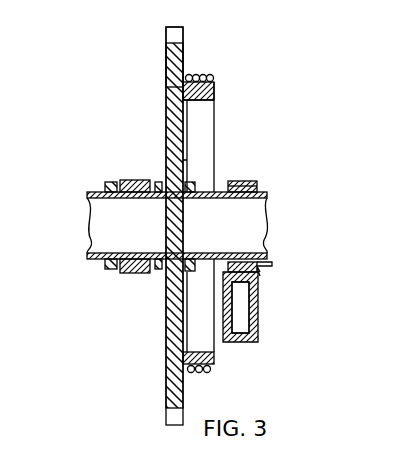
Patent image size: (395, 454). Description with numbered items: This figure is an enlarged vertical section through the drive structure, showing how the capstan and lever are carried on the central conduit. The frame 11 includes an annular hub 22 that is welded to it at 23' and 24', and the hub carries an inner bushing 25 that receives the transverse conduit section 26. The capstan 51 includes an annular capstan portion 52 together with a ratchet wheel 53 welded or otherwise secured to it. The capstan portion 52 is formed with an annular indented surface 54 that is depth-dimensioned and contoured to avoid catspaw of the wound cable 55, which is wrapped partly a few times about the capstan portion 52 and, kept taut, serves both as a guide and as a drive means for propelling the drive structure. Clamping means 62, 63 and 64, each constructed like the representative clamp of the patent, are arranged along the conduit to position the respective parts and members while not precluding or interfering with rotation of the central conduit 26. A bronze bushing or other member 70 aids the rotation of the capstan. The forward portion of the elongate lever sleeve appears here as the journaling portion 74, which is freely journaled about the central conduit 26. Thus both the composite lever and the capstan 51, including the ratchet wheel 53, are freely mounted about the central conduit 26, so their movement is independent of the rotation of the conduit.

The frame 11 is at (258, 305).
The annular hub 22 is at (259, 270).
The weld 23' is at (234, 317).
The weld 24' is at (304, 289).
The inner bushing 25 is at (272, 265).
The transverse conduit section 26 is at (88, 190).
The capstan 51 is at (184, 50).
The annular capstan portion 52 is at (216, 94).
The ratchet wheel 53 is at (166, 62).
The annular indented surface 54 is at (214, 82).
The cable 55 is at (212, 75).
The clamping means 62 is at (232, 182).
The clamping means 63 is at (183, 165).
The clamping means 64 is at (105, 184).
The bronze bushing 70 is at (193, 184).
The journaling portion 74 is at (130, 180).